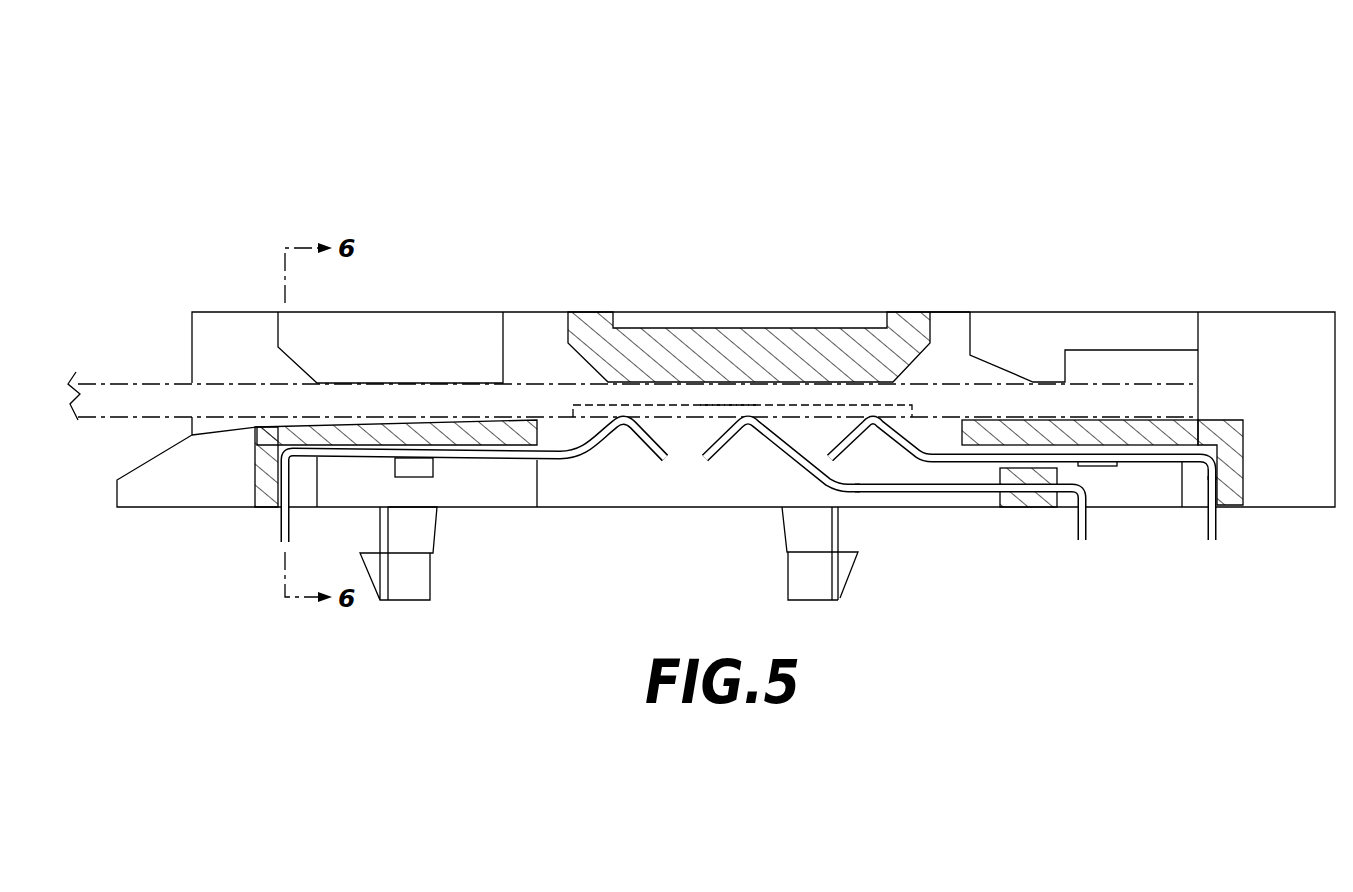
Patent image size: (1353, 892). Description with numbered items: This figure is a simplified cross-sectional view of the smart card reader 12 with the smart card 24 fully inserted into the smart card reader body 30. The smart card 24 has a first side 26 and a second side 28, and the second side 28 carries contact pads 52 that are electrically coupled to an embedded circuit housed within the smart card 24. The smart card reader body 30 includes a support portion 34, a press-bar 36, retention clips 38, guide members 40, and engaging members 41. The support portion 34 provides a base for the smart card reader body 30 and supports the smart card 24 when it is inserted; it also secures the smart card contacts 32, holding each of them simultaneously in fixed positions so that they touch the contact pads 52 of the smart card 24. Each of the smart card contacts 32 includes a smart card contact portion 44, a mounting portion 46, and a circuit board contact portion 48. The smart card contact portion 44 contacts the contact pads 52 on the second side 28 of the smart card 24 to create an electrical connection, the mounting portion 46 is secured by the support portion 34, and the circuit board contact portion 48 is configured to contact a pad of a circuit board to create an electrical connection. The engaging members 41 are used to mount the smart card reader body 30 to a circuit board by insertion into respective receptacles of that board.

The smart card reader 12 is at (1072, 226).
The smart card 24 is at (155, 388).
The first side 26 is at (948, 383).
The second side 28 is at (928, 430).
The smart card reader body 30 is at (209, 281).
The smart card contacts 32 is at (500, 462).
The support portion 34 is at (268, 500).
The press-bar 36 is at (830, 352).
The retention clips 38 is at (1035, 337).
The guide members 40 is at (400, 337).
The engaging members 41 is at (403, 585).
The smart card contact portion 44 is at (880, 405).
The mounting portion 46 is at (1200, 442).
The circuit board contact portion 48 is at (1213, 540).
The contact pads 52 is at (722, 405).